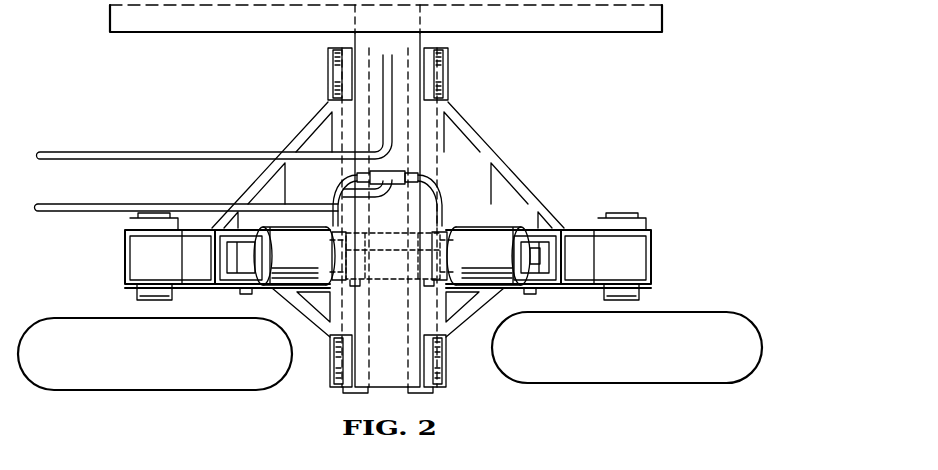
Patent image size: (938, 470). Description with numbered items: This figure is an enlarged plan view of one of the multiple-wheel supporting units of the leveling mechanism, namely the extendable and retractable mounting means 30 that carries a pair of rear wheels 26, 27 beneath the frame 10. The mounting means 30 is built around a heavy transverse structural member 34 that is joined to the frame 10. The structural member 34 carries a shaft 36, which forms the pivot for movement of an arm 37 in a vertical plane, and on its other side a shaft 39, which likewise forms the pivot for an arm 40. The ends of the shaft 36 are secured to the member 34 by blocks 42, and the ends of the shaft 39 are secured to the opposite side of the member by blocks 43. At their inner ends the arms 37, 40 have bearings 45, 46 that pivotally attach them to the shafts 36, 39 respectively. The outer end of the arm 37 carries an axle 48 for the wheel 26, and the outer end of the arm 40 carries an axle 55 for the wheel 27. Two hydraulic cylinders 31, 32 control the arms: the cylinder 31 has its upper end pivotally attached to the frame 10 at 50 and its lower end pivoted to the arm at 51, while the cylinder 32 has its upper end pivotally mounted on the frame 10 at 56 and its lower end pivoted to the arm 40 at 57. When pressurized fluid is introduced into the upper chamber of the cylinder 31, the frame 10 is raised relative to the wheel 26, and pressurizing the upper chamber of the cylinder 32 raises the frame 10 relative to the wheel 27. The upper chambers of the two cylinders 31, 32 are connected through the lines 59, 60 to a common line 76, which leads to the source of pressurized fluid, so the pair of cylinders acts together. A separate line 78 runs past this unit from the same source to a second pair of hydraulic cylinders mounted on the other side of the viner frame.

The frame 10 is at (276, 43).
The wheel 26 is at (214, 379).
The wheel 27 is at (590, 374).
The mounting means 30 is at (328, 75).
The hydraulic cylinder 31 is at (283, 257).
The hydraulic cylinder 32 is at (470, 254).
The transverse structural member 34 is at (378, 386).
The shaft 36 is at (343, 392).
The arm 37 is at (197, 292).
The shaft 39 is at (432, 392).
The arm 40 is at (562, 290).
The blocks 42 is at (330, 356).
The blocks 43 is at (445, 356).
The bearing 45 is at (318, 132).
The bearing 46 is at (438, 122).
The axle 48 is at (141, 314).
The upper pivot of cylinder 31 50 is at (366, 286).
The lower pivot of cylinder 31 51 is at (250, 298).
The axle 55 is at (640, 306).
The upper pivot of cylinder 32 56 is at (416, 282).
The lower pivot of cylinder 32 57 is at (527, 297).
The line 59 is at (333, 192).
The line 60 is at (444, 193).
The common line 76 is at (153, 206).
The separate line 78 is at (135, 155).